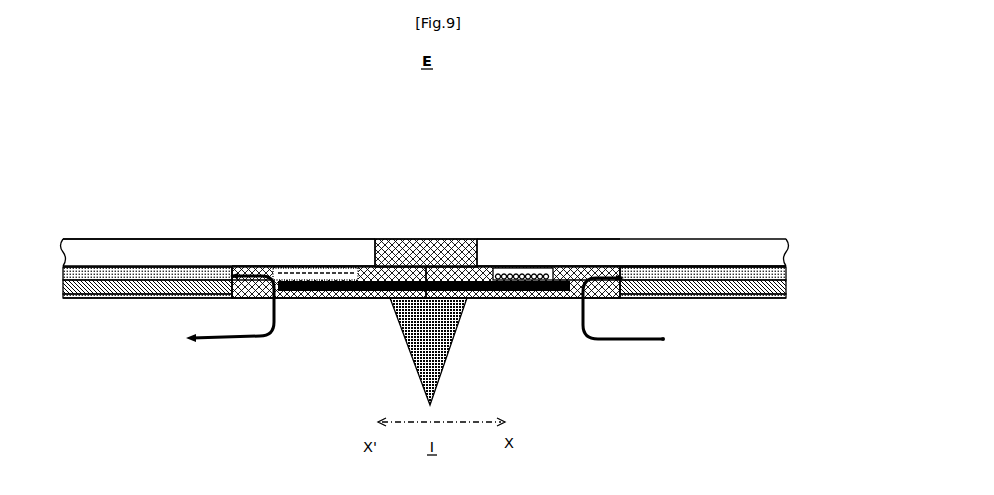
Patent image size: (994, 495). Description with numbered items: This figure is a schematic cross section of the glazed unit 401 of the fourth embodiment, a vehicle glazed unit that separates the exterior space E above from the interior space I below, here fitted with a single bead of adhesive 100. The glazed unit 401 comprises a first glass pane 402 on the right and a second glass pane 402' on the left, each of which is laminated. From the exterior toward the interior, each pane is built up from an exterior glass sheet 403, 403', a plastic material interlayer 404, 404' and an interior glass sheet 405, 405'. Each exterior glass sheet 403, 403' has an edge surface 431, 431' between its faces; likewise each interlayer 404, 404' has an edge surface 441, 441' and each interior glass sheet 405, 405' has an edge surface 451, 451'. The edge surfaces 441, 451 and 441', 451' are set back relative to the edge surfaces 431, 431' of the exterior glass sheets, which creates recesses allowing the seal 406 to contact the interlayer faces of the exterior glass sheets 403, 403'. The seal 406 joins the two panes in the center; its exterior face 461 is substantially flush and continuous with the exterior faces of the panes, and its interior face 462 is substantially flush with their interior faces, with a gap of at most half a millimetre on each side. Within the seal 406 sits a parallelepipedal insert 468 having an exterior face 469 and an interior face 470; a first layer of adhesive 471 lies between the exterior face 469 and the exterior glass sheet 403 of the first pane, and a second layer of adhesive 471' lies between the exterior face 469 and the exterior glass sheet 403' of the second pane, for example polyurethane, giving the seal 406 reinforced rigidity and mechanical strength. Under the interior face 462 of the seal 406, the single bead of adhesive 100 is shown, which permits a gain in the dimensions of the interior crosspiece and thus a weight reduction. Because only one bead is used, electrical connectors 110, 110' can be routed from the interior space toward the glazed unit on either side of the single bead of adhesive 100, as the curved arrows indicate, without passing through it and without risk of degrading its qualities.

The single bead of adhesive 100 is at (413, 338).
The electrical connector 110 is at (509, 359).
The electrical connector 110' is at (349, 361).
The glazed unit 401 is at (380, 158).
The first glass pane 402 is at (703, 202).
The second glass pane 402' is at (147, 202).
The exterior glass sheet 403 is at (703, 225).
The exterior glass sheet 403' is at (138, 205).
The plastic material interlayer 404 is at (703, 330).
The plastic material interlayer 404' is at (147, 320).
The interior glass sheet 405 is at (710, 348).
The interior glass sheet 405' is at (147, 345).
The seal 406 is at (427, 228).
The edge surface 431 is at (548, 206).
The edge surface 431' is at (303, 223).
The edge surface 441 is at (523, 271).
The edge surface 441' is at (329, 271).
The edge surface 451 is at (573, 315).
The edge surface 451' is at (253, 326).
The exterior face 461 is at (453, 240).
The interior face 462 is at (375, 298).
The insert 468 is at (488, 298).
The exterior face 469 is at (402, 240).
The interior face 470 is at (333, 297).
The first layer of adhesive 471 is at (521, 314).
The second layer of adhesive 471' is at (315, 315).